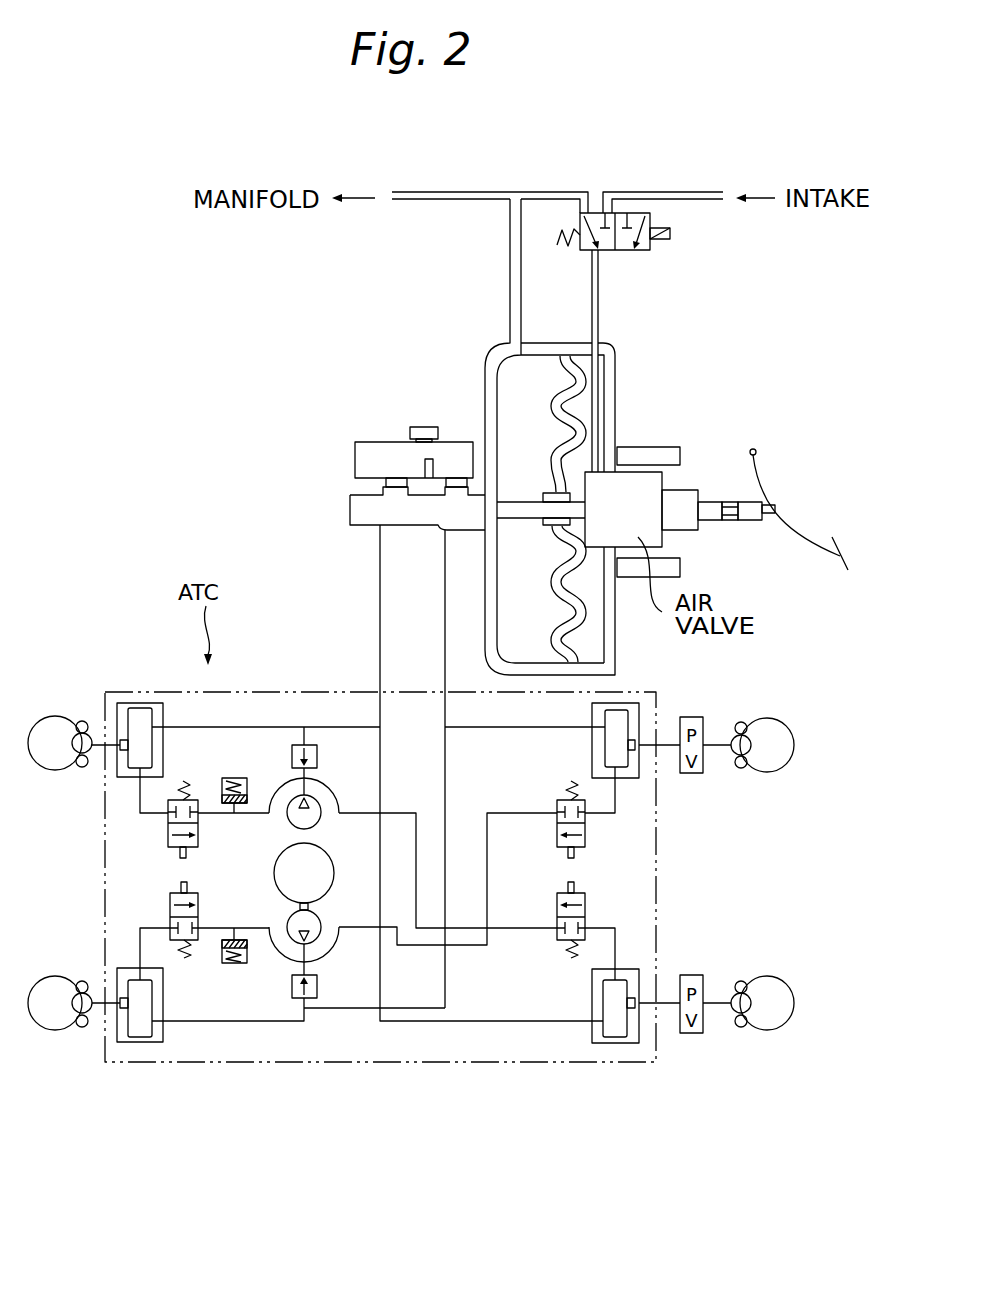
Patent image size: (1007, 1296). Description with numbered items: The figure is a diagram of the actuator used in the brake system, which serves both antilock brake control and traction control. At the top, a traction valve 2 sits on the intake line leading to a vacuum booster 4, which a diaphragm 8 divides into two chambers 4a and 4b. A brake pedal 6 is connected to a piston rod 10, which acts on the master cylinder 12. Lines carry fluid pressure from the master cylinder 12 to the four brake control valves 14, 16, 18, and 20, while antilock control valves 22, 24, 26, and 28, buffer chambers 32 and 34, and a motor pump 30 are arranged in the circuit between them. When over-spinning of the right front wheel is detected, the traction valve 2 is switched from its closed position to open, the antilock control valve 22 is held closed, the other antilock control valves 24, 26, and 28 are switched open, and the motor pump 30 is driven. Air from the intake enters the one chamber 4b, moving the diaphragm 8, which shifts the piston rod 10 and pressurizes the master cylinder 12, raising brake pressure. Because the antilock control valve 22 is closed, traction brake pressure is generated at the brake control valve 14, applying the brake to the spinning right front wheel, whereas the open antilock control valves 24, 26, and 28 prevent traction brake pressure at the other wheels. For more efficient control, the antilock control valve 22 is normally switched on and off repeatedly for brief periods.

The traction valve 2 is at (643, 250).
The vacuum booster 4 is at (485, 387).
The chamber 4a is at (522, 395).
The chamber 4b is at (580, 376).
The brake pedal 6 is at (777, 507).
The diaphragm 8 is at (575, 431).
The piston rod 10 is at (520, 513).
The master cylinder 12 is at (368, 507).
The brake control valve 14 is at (120, 712).
The brake control valve 16 is at (160, 1040).
The brake control valve 18 is at (633, 722).
The brake control valve 20 is at (637, 1040).
The antilock control valve 22 is at (168, 828).
The antilock control valve 24 is at (170, 903).
The antilock control valve 26 is at (587, 830).
The antilock control valve 28 is at (587, 900).
The motor pump 30 is at (273, 872).
The buffer chamber 32 is at (225, 778).
The buffer chamber 34 is at (227, 965).